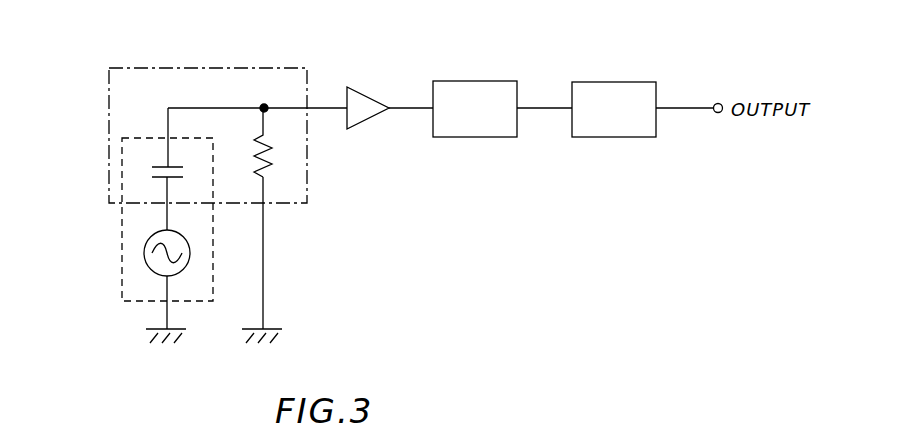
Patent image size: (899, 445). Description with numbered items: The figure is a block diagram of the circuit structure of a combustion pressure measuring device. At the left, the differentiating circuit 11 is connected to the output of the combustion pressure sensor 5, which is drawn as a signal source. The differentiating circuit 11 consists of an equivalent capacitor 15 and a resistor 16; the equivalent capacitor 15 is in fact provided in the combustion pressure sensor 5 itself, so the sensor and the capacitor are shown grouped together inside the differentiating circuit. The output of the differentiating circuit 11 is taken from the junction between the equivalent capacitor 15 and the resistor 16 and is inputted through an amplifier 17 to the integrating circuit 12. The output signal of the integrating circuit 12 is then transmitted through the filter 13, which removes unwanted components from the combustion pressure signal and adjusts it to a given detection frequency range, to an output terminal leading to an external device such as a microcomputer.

The differentiating circuit 11 is at (218, 67).
The combustion pressure sensor 5 is at (122, 248).
The equivalent capacitor 15 is at (163, 165).
The resistor 16 is at (270, 165).
The amplifier 17 is at (375, 92).
The integrating circuit 12 is at (474, 80).
The filter 13 is at (613, 81).